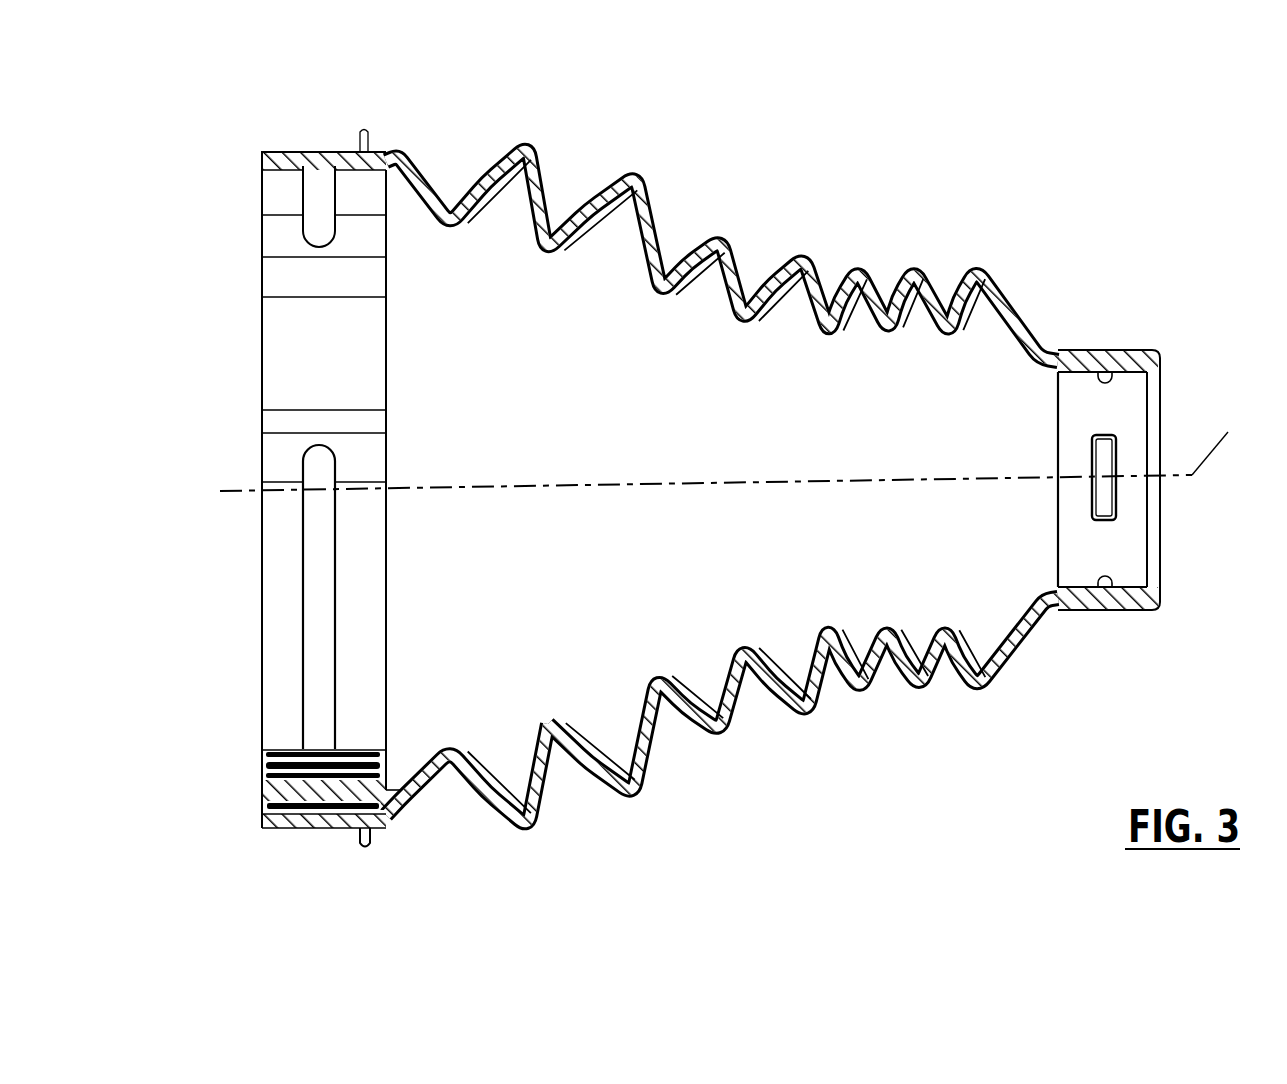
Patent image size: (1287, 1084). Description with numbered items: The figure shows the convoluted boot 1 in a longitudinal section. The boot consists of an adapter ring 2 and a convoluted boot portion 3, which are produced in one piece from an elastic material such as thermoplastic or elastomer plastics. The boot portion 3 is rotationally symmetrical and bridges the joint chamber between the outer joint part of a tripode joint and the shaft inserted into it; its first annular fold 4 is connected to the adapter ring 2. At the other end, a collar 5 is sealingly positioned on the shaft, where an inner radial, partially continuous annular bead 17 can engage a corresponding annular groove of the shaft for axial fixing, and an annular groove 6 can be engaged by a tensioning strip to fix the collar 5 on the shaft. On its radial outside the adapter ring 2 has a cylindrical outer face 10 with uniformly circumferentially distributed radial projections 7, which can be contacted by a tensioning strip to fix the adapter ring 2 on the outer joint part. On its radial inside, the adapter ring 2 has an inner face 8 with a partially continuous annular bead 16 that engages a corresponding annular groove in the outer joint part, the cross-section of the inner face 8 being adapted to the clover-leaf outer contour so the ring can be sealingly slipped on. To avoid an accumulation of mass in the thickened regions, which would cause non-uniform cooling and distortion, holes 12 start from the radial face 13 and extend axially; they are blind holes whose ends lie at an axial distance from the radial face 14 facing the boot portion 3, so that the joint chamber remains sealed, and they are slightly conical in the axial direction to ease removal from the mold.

The convoluted boot 1 is at (746, 135).
The adapter ring 2 is at (262, 150).
The convoluted boot portion 3 is at (737, 254).
The first annular fold 4 is at (435, 790).
The collar 5 is at (1162, 348).
The annular groove 6 is at (1118, 352).
The radial projections 7 is at (370, 843).
The inner face 8 is at (277, 727).
The cylindrical outer face 10 is at (318, 822).
The holes 12 is at (262, 810).
The radial face 13 is at (262, 785).
The radial face 14 is at (393, 566).
The annular bead 16 is at (318, 620).
The annular bead 17 is at (1117, 498).